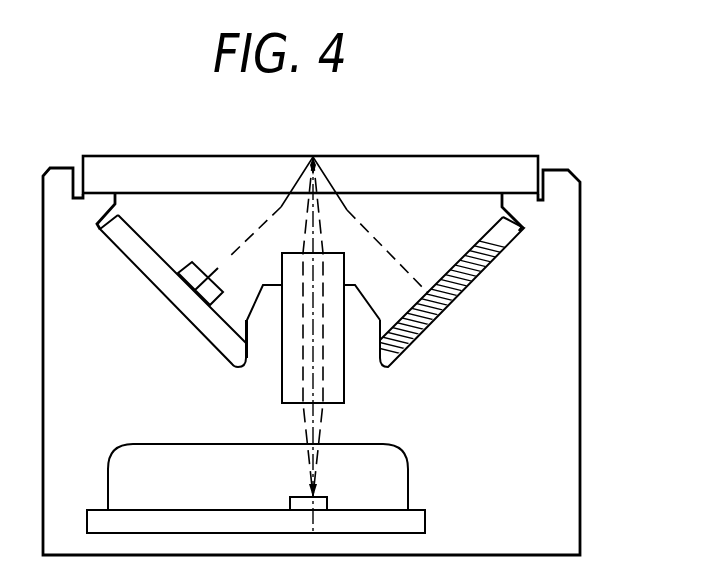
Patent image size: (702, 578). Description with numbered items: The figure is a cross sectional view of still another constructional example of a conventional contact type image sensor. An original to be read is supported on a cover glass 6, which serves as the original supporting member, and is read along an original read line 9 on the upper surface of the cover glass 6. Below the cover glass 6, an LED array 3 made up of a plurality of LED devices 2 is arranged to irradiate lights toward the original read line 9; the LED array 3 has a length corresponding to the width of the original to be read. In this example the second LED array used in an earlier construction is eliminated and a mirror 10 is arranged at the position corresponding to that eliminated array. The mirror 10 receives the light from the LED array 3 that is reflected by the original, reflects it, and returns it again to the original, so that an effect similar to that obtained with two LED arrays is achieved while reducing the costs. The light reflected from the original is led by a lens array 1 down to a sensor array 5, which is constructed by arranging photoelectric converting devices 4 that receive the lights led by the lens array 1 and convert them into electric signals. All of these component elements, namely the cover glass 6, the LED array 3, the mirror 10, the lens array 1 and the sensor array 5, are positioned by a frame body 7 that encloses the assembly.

The lens array 1 is at (336, 281).
The LED devices 2 is at (193, 261).
The LED array 3 is at (148, 257).
The photoelectric converting devices 4 is at (288, 503).
The sensor array 5 is at (415, 517).
The cover glass 6 is at (237, 157).
The frame body 7 is at (562, 337).
The original read line 9 is at (313, 157).
The mirror 10 is at (524, 230).